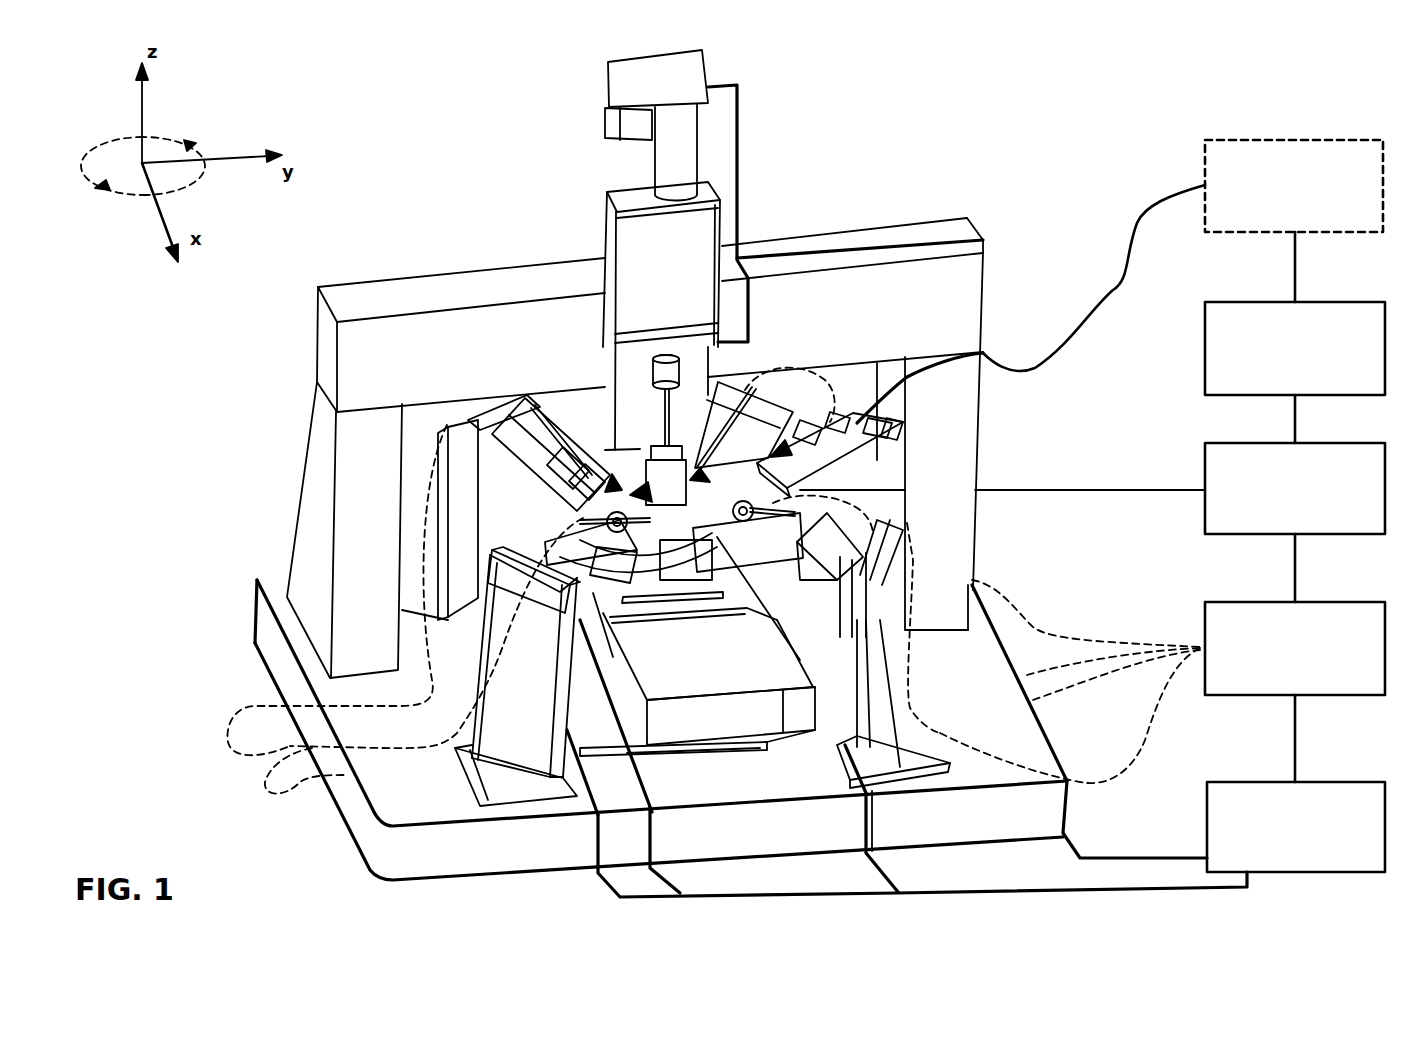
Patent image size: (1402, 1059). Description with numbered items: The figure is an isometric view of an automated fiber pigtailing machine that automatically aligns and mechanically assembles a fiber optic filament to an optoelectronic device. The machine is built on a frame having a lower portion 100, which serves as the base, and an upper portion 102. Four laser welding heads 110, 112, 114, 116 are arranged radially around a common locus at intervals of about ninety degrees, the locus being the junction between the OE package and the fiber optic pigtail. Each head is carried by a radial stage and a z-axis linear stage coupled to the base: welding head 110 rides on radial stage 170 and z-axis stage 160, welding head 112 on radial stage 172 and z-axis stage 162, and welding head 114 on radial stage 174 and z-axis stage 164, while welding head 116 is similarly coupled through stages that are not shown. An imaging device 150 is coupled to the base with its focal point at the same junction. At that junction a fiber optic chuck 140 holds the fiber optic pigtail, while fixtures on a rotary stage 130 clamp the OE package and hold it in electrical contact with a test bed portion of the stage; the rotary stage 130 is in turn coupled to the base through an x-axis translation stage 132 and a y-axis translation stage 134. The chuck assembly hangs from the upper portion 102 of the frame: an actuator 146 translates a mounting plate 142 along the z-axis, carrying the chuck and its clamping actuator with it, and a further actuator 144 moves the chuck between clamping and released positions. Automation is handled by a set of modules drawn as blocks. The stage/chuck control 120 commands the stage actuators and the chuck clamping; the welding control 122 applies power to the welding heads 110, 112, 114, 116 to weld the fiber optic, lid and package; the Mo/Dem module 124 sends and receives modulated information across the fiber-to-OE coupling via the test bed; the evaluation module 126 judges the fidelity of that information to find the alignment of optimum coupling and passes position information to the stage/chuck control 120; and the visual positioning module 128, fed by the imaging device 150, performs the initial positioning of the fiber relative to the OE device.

The lower portion of the frame 100 is at (1067, 792).
The upper portion of the frame 102 is at (410, 297).
The welding head 110 is at (636, 468).
The welding head 112 is at (603, 567).
The welding head 114 is at (776, 640).
The welding head 116 is at (785, 380).
The stage/chuck control 120 is at (1297, 782).
The welding control 122 is at (1297, 602).
The modulation and demodulation (Mo/Dem) module 124 is at (1297, 443).
The evaluation module 126 is at (1295, 282).
The visual positioning module 128 is at (1290, 140).
The rotary stage 130 is at (707, 563).
The x-axis translation stage 132 is at (800, 722).
The y-axis translation stage 134 is at (743, 720).
The fiber optic chuck 140 is at (572, 518).
The mounting plate 142 is at (630, 345).
The actuator 144 is at (680, 368).
The actuator 146 is at (687, 76).
The imaging device 150 is at (865, 422).
The z-axis stage 160 is at (468, 583).
The z-axis stage 162 is at (528, 790).
The z-axis stage 164 is at (905, 742).
The radial stage 170 is at (540, 452).
The radial stage 172 is at (565, 685).
The radial stage 174 is at (832, 640).